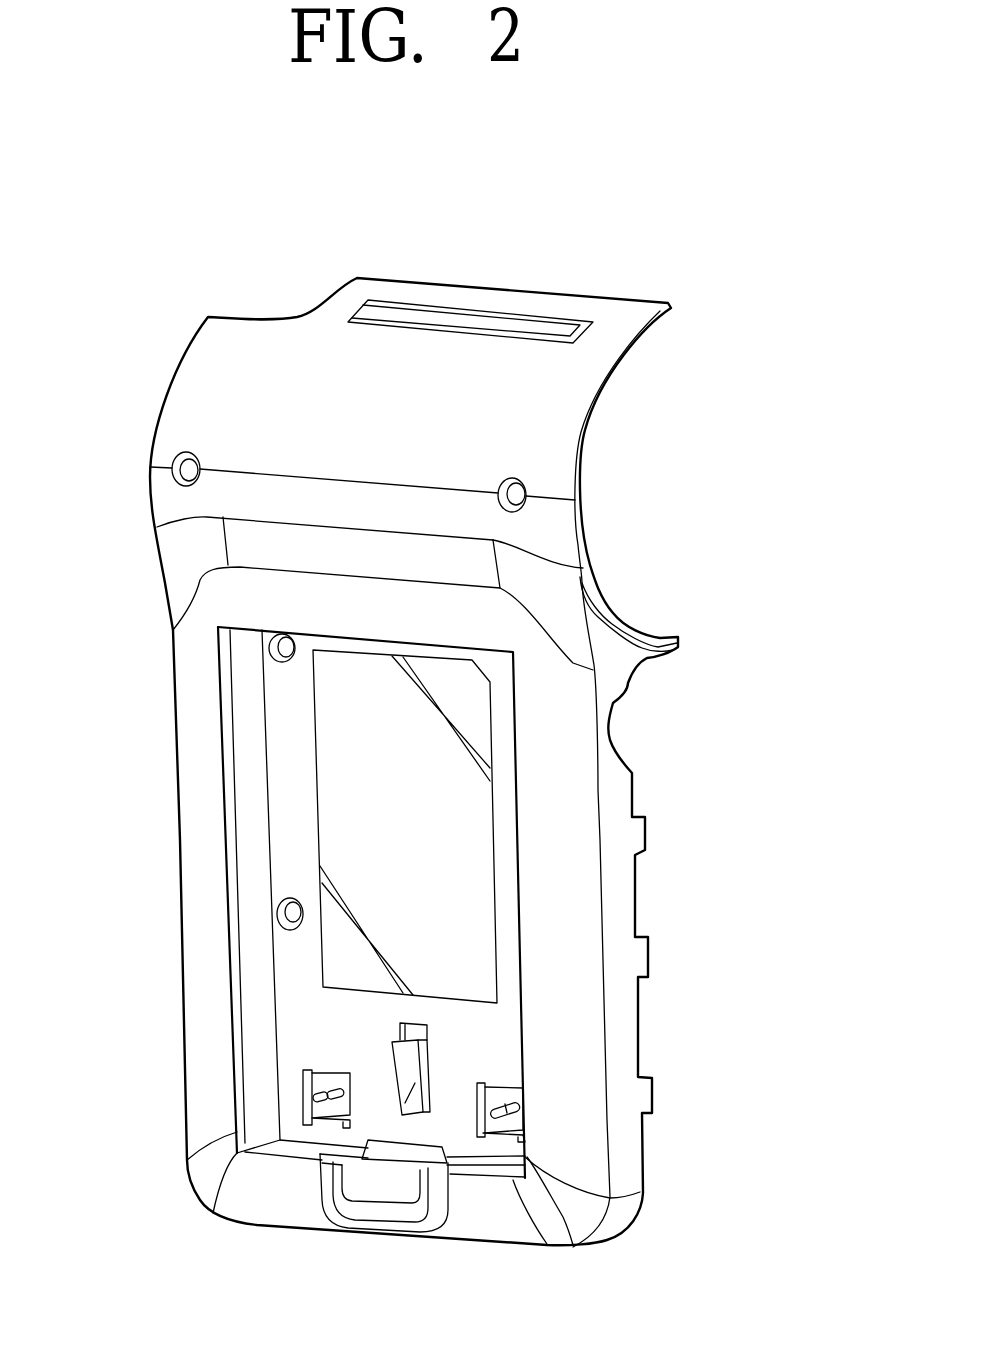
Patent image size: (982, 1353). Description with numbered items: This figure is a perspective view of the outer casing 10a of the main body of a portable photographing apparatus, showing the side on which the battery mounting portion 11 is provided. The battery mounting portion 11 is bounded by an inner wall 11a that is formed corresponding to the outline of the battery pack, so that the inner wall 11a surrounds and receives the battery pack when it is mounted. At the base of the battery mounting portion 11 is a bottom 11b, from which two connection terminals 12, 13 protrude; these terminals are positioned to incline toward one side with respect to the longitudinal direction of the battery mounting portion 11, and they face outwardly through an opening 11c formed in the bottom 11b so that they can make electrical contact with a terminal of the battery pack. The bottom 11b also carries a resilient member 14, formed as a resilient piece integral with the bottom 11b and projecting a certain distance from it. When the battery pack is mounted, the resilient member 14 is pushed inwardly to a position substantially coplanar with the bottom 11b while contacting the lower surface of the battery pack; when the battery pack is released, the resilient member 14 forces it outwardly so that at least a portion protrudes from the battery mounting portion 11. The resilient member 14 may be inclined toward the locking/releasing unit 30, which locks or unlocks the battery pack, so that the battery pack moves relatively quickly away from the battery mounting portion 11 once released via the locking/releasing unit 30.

The outer casing 10a is at (198, 362).
The battery mounting portion 11 is at (468, 968).
The inner wall 11a is at (252, 873).
The bottom 11b is at (470, 848).
The opening 11c is at (307, 1090).
The connection terminal 12 is at (323, 1088).
The connection terminal 13 is at (497, 1098).
The resilient member 14 is at (402, 1115).
The locking/releasing unit 30 is at (383, 1180).